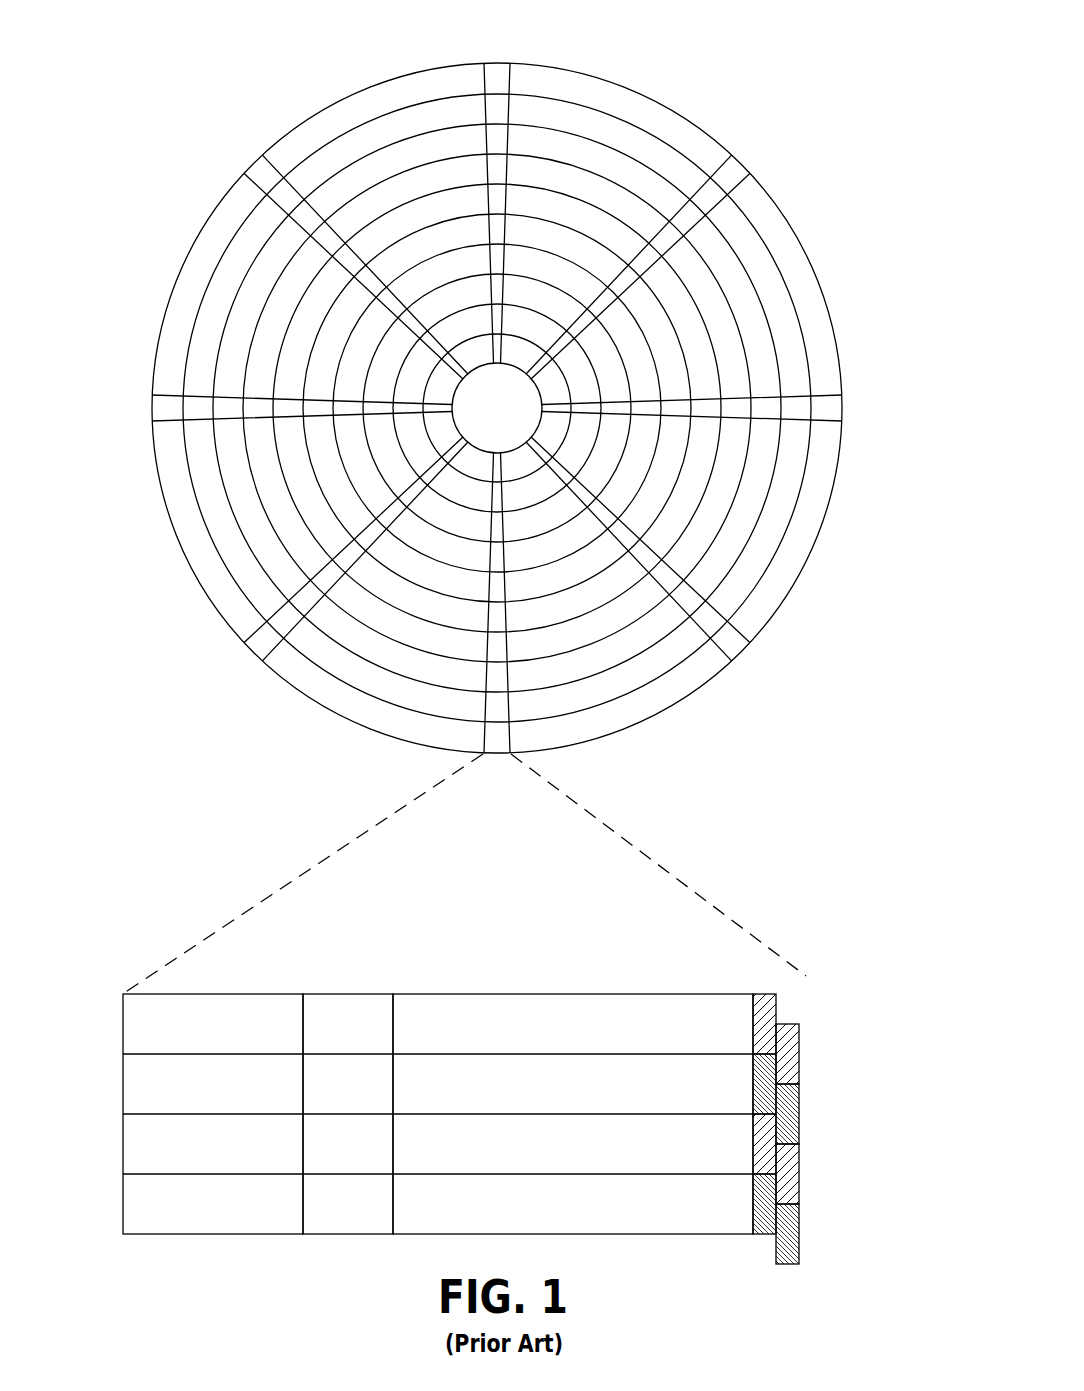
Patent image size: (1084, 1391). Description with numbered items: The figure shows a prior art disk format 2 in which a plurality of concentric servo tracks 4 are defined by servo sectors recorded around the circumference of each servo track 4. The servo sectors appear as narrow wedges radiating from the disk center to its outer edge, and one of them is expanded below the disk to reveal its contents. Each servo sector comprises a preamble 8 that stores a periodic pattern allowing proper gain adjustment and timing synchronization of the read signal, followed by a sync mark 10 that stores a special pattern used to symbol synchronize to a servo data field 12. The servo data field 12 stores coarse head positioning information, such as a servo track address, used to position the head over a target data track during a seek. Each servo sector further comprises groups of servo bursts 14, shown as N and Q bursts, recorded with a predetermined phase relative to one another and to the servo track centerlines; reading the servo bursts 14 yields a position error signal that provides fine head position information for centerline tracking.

The disk format 2 is at (240, 68).
The servo track 4 is at (638, 118).
The preamble 8 is at (220, 994).
The sync mark 10 is at (350, 994).
The servo data field 12 is at (560, 994).
The servo bursts 14 is at (797, 995).